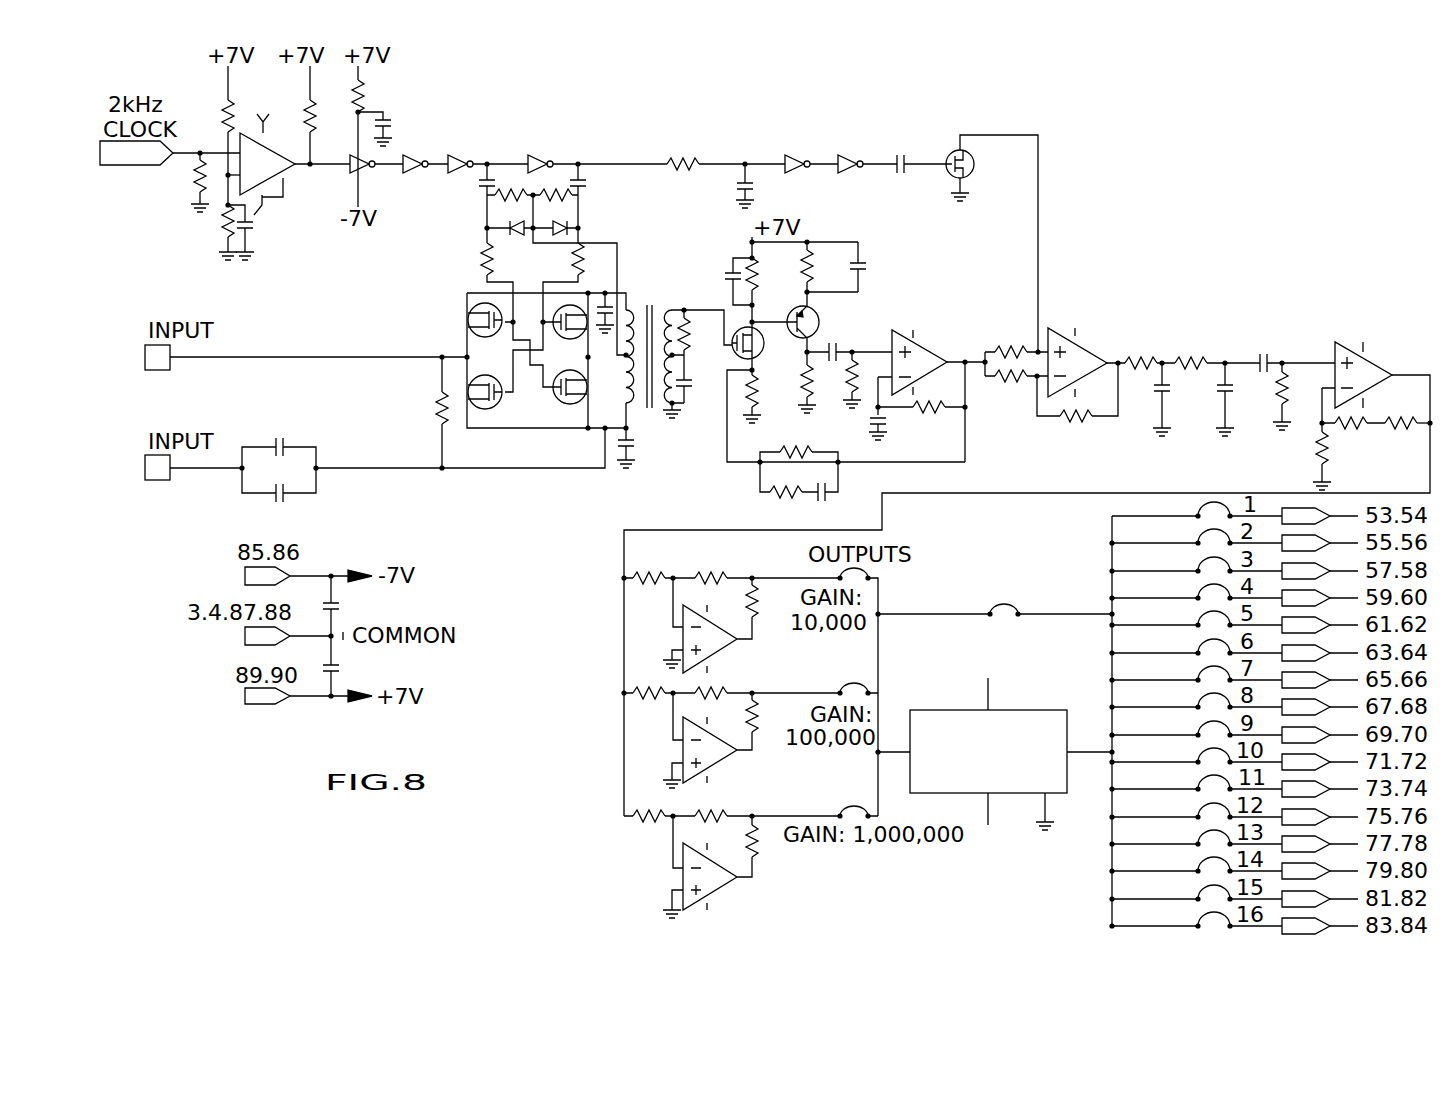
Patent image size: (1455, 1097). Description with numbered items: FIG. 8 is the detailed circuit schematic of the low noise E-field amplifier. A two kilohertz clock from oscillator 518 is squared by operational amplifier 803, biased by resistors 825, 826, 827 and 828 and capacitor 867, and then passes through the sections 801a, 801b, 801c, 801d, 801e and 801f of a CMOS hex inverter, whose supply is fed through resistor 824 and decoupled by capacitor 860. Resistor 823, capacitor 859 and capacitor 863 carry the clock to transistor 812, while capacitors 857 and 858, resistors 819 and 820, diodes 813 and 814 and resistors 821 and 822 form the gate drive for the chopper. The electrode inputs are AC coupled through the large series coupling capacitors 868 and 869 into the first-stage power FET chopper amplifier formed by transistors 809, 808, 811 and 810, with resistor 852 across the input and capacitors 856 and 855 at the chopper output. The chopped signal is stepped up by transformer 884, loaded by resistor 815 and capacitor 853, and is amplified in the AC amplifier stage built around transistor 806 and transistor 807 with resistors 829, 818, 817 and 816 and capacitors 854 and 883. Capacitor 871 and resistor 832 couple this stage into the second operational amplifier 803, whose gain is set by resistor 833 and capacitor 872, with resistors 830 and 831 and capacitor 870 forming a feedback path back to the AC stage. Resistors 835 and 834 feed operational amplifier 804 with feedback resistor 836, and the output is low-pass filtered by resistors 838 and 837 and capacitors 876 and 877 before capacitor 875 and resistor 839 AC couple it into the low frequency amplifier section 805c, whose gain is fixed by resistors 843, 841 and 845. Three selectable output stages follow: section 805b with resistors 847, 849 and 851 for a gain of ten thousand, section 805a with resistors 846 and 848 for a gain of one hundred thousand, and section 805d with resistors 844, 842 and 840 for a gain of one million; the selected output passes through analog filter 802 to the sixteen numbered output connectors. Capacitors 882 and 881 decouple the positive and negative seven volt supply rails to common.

The oscillator 518 is at (125, 166).
The resistor R11 825 is at (228, 112).
The resistor R12 826 is at (312, 124).
The resistor R13 827 is at (196, 194).
The resistor R14 828 is at (228, 227).
The capacitor C15 867 is at (254, 228).
The operational amplifier U3 803 is at (298, 168).
The resistor R10 824 is at (365, 90).
The capacitor C8 860 is at (395, 132).
The hex inverter section 801a is at (374, 168).
The hex inverter section 801b is at (428, 157).
The hex inverter section 801c is at (468, 169).
The hex inverter section 801d is at (858, 155).
The hex inverter section 801e is at (797, 155).
The hex inverter section 801f is at (546, 157).
The resistor R9 823 is at (690, 158).
The capacitor C7 859 is at (753, 190).
The capacitor C11 863 is at (900, 174).
The transistor Q7 812 is at (972, 174).
The capacitor C5 857 is at (484, 183).
The capacitor C6 858 is at (590, 182).
The resistor R5 819 is at (505, 199).
The resistor R6 820 is at (575, 198).
The diode D1 813 is at (518, 236).
The diode D2 814 is at (558, 237).
The resistor R7 821 is at (485, 248).
The resistor R8 822 is at (583, 257).
The capacitor C4 856 is at (618, 300).
The transformer T1 884 is at (664, 311).
The resistor R1 815 is at (689, 344).
The capacitor C1 853 is at (692, 389).
The capacitor C3 855 is at (634, 444).
The transistor Q4 809 is at (466, 322).
The transistor Q3 808 is at (498, 394).
The transistor Q6 811 is at (578, 339).
The transistor Q5 810 is at (572, 404).
The resistor R38 852 is at (440, 410).
The capacitor C16A 868 is at (286, 442).
The capacitor C16B 869 is at (287, 503).
The capacitor C29 882 is at (340, 608).
The capacitor C28 881 is at (340, 666).
The capacitor C2 854 is at (729, 275).
The resistor R2 816 is at (808, 270).
The resistor R3 817 is at (753, 290).
The capacitor C30 883 is at (866, 264).
The transistor Q2 807 is at (819, 314).
The transistor Q1 806 is at (763, 347).
The resistor R15 829 is at (757, 398).
The resistor R4 818 is at (802, 381).
The capacitor C18 871 is at (836, 345).
The resistor R18 832 is at (847, 391).
The resistor R19 833 is at (914, 409).
The capacitor C19 872 is at (887, 432).
The resistor R16 830 is at (816, 449).
The resistor R17 831 is at (790, 498).
The capacitor C17 870 is at (828, 497).
The resistor R21 835 is at (1016, 347).
The resistor R20 834 is at (1013, 379).
The operational amplifier U4 804 is at (1088, 352).
The resistor R22 836 is at (1070, 424).
The resistor R24 838 is at (1148, 356).
The resistor R23 837 is at (1201, 354).
The capacitor C23 876 is at (1153, 393).
The capacitor C24 877 is at (1222, 388).
The capacitor C22 875 is at (1266, 357).
The resistor R25 839 is at (1280, 392).
The operational amplifier section 805c is at (1378, 362).
The resistor R29 843 is at (1349, 426).
The resistor R27 841 is at (1396, 428).
The resistor R31 845 is at (1320, 444).
The resistor R33 847 is at (662, 563).
The resistor R35 849 is at (716, 573).
The resistor R37 851 is at (760, 612).
The operational amplifier section 805b is at (728, 652).
The resistor R32 846 is at (650, 701).
The resistor R34 848 is at (724, 697).
The operational amplifier section 805a is at (728, 758).
The resistor R30 844 is at (648, 820).
The resistor R28 842 is at (723, 813).
The resistor R26 840 is at (761, 847).
The operational amplifier section 805d is at (724, 888).
The analog filter U2 802 is at (1012, 710).